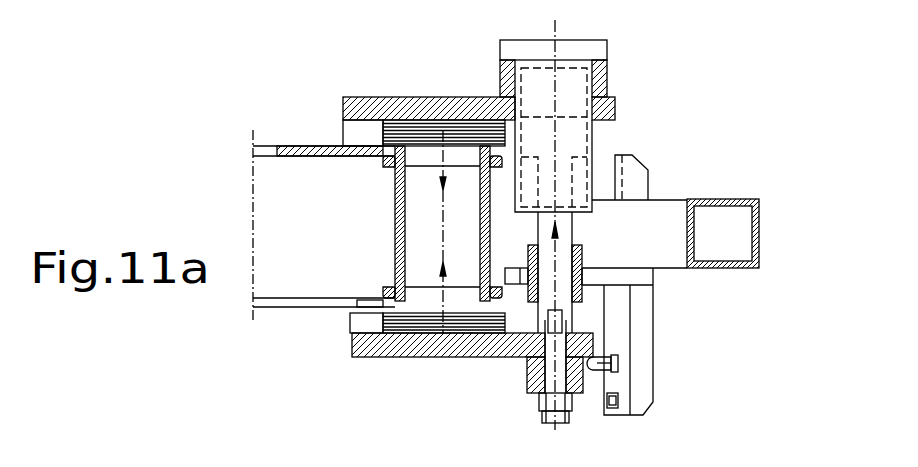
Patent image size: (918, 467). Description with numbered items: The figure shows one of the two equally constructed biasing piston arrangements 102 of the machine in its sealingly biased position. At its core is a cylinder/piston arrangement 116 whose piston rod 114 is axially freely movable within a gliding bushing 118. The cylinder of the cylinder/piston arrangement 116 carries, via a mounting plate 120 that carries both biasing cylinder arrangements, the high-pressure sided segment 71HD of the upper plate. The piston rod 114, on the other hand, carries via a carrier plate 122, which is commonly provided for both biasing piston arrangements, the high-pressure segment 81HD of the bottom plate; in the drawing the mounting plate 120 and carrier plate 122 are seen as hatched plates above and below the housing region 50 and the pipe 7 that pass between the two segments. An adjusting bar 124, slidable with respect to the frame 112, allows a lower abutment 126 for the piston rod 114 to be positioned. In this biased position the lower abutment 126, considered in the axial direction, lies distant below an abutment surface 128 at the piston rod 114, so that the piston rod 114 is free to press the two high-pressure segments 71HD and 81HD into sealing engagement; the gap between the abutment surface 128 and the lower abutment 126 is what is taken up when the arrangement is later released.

The housing 50 is at (338, 243).
The pipe 7 is at (432, 225).
The mounting plate 120 is at (442, 97).
The high-pressure sided segment of plate 71 71HD is at (412, 132).
The biasing piston arrangement 102 is at (585, 40).
The cylinder/piston arrangement 116 is at (580, 142).
The frame 112 is at (708, 198).
The gliding bushing 118 is at (583, 291).
The adjusting bar 124 is at (647, 383).
The abutment surface 128 is at (608, 352).
The lower abutment 126 is at (617, 360).
The carrier plate 122 is at (377, 345).
The high-pressure segment of the bottom plate 81 81HD is at (425, 323).
The piston rod 114 is at (545, 300).